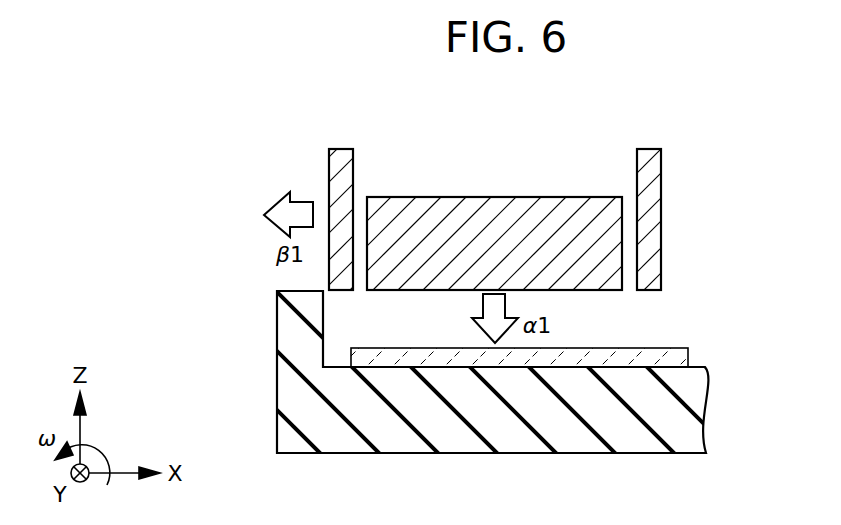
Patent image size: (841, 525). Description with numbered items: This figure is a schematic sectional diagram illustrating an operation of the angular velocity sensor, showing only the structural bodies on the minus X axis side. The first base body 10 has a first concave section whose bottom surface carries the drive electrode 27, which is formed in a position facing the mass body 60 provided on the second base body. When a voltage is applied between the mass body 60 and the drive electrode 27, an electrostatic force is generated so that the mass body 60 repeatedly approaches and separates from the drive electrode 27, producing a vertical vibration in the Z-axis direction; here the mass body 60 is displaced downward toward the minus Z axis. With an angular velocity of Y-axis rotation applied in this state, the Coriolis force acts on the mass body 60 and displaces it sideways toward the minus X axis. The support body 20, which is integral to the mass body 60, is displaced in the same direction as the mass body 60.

The first base body 10 is at (702, 400).
The support body 20 is at (335, 158).
The drive electrode 27 is at (687, 352).
The mass body 60 is at (497, 200).